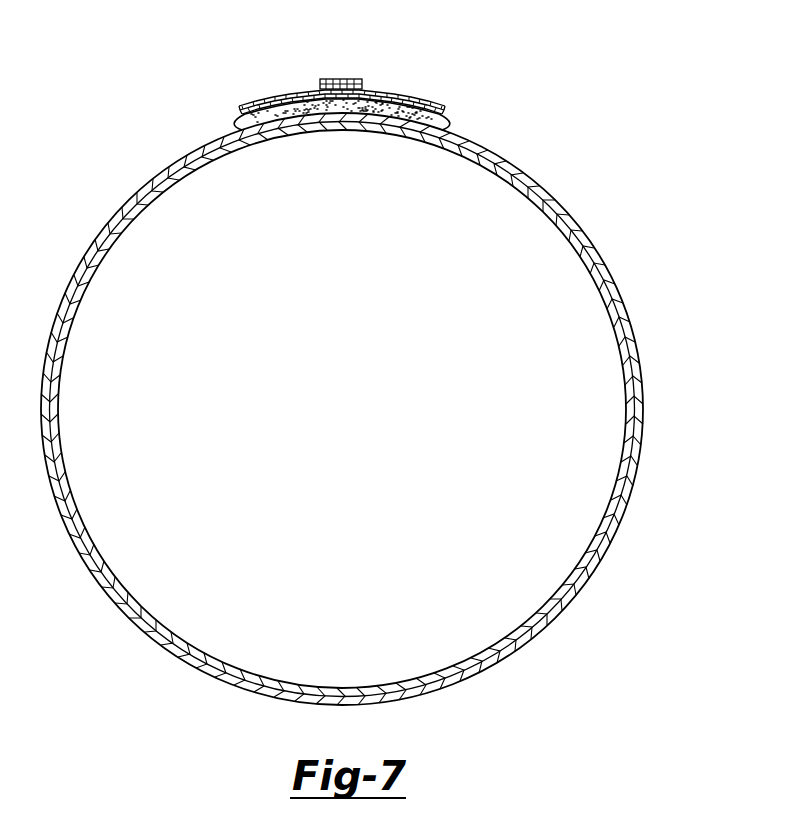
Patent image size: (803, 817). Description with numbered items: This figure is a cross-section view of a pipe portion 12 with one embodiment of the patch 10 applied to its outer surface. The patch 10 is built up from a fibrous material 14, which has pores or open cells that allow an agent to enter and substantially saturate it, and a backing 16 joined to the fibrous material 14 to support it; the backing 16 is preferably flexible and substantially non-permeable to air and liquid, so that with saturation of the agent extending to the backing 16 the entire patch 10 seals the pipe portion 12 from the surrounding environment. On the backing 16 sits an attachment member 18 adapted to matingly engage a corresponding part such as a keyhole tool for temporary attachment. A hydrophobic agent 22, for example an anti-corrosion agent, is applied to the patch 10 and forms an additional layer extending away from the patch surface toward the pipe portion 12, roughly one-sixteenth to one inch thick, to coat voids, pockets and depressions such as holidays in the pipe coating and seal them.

The patch 10 is at (343, 70).
The pipe portion 12 is at (548, 157).
The fibrous material 14 is at (440, 108).
The backing 16 is at (410, 90).
The attachment member 18 is at (330, 79).
The agent 22 is at (238, 123).